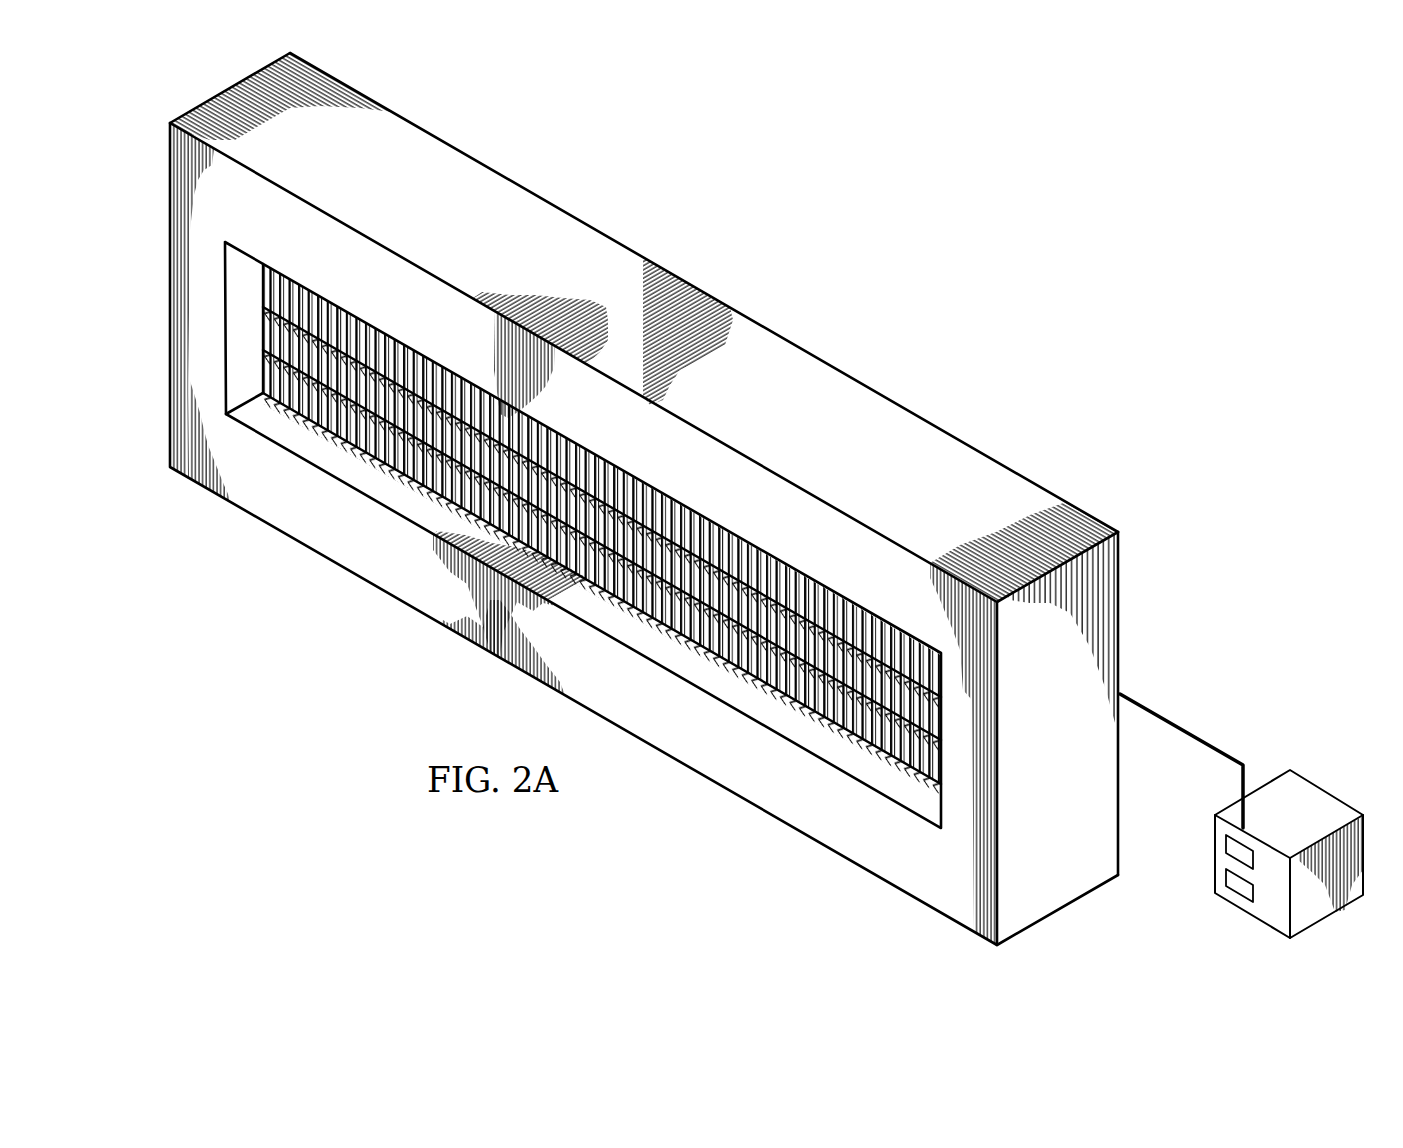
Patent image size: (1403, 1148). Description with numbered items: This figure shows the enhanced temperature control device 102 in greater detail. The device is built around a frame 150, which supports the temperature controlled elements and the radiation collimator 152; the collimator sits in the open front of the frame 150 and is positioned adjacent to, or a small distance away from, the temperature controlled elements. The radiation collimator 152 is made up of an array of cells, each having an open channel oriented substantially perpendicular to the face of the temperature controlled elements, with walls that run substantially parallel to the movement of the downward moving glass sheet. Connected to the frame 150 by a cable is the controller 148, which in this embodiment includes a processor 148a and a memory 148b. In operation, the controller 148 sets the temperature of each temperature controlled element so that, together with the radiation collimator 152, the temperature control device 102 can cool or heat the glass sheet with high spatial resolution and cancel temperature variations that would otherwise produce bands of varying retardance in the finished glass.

The enhanced temperature control device 102 is at (849, 239).
The frame 150 is at (926, 430).
The radiation collimator 152 is at (254, 289).
The controller 148 is at (1244, 816).
The processor 148a is at (1226, 843).
The memory 148b is at (1226, 877).